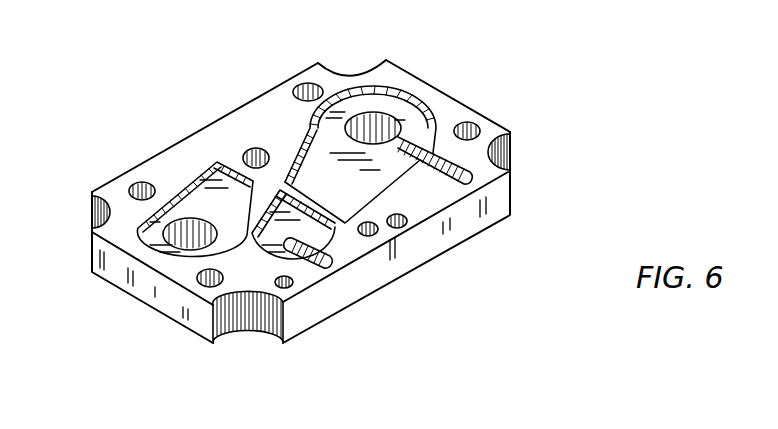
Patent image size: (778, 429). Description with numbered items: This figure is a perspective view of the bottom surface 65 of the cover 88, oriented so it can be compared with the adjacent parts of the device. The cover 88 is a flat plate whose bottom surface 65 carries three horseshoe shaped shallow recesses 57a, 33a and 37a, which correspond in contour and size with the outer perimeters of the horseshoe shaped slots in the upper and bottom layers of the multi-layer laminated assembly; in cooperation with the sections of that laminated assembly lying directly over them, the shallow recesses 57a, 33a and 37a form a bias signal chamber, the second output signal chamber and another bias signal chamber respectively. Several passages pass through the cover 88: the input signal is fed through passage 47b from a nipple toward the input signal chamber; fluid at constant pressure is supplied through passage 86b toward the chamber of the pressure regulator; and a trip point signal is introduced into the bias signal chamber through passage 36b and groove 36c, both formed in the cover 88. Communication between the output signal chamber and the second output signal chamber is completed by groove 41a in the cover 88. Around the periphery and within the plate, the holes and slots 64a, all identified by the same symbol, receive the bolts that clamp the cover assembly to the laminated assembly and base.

The holes and slots 64a is at (305, 82).
The shallow recess 37a is at (408, 118).
The passage 36b is at (500, 178).
The groove 36c is at (435, 175).
The passage 47b is at (407, 225).
The bottom surface 65 is at (117, 233).
The shallow recess 57a is at (158, 222).
The cover 88 is at (183, 328).
The passage 86b is at (262, 290).
The shallow recess 33a is at (288, 248).
The groove 41a is at (347, 260).